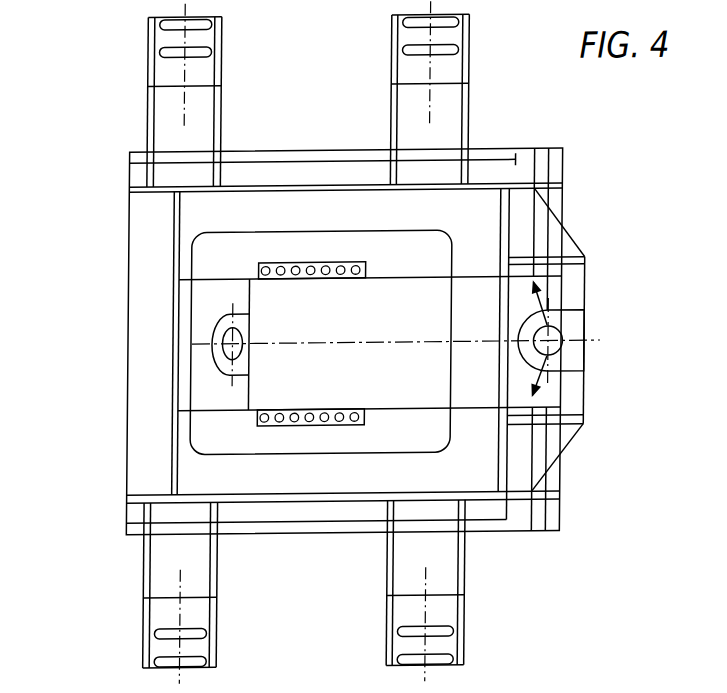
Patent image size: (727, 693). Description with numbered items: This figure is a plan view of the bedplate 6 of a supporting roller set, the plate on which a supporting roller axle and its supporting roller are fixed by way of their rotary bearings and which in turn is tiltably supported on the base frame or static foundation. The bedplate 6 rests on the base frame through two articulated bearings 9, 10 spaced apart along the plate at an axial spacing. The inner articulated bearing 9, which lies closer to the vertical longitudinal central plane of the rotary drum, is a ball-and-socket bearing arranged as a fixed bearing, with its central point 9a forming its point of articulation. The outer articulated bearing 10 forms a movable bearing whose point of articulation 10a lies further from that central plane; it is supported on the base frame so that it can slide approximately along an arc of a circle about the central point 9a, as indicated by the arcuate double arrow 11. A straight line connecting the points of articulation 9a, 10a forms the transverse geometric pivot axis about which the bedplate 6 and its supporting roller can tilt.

The bedplate 6 is at (128, 245).
The inner articulated bearing 9 is at (216, 352).
The central point of the inner ball-and-socket bearing 9a is at (235, 341).
The outer articulated bearing 10 is at (585, 325).
The point of articulation of the outer articulated bearing 10a is at (553, 345).
The arcuate double arrow 11 is at (545, 292).